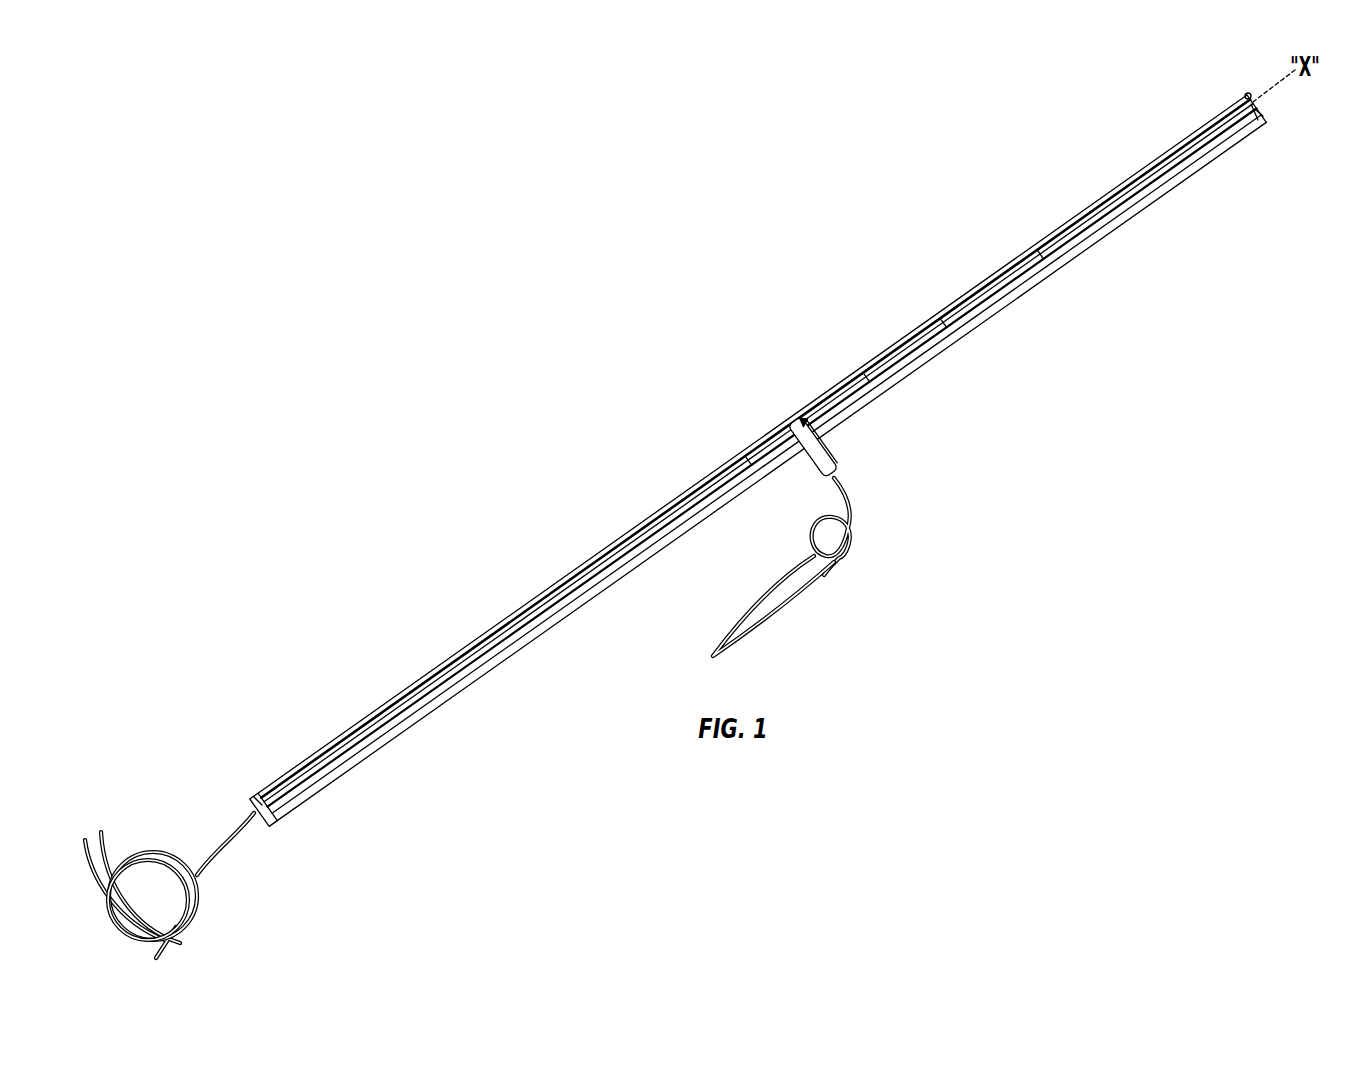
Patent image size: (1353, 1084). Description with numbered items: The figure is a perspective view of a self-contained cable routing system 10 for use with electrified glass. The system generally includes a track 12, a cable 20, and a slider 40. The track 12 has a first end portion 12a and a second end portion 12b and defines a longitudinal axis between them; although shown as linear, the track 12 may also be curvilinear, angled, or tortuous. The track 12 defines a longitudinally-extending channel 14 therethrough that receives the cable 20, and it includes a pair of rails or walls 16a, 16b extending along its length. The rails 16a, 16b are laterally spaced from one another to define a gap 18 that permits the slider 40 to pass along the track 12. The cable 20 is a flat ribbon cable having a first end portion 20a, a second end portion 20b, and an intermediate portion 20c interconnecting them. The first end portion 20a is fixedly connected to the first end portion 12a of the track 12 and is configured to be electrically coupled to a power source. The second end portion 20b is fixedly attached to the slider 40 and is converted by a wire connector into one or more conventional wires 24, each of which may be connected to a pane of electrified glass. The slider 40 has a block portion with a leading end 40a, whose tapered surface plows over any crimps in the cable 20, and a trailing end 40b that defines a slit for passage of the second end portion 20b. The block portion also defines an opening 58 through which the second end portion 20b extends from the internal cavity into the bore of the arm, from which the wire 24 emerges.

The self-contained cable routing system 10 is at (670, 278).
The track 12 is at (1049, 226).
The first end portion of the track 12a is at (256, 794).
The second end portion of the track 12b is at (1256, 127).
The channel 14 is at (1147, 170).
The first rail 16a is at (1249, 93).
The second rail 16b is at (1263, 114).
The gap 18 is at (1185, 137).
The cable 20 is at (1000, 275).
The first end portion of the cable 20a is at (522, 618).
The second end portion of the cable 20b is at (940, 335).
The intermediate portion of the cable 20c is at (1037, 260).
The wire 24 is at (820, 585).
The slider 40 is at (845, 442).
The leading end 40a is at (746, 456).
The trailing end 40b is at (864, 380).
The opening 58 is at (832, 484).